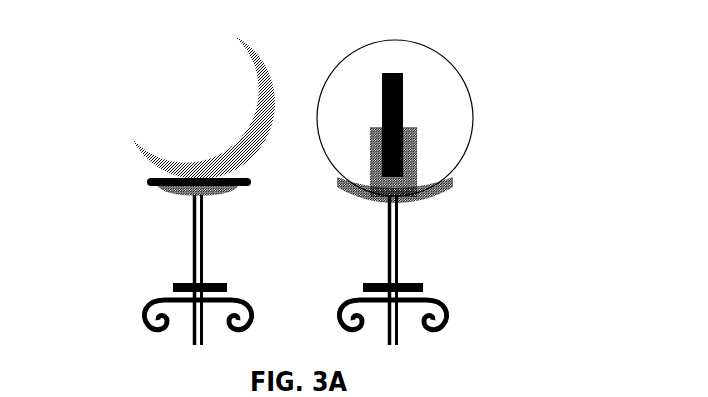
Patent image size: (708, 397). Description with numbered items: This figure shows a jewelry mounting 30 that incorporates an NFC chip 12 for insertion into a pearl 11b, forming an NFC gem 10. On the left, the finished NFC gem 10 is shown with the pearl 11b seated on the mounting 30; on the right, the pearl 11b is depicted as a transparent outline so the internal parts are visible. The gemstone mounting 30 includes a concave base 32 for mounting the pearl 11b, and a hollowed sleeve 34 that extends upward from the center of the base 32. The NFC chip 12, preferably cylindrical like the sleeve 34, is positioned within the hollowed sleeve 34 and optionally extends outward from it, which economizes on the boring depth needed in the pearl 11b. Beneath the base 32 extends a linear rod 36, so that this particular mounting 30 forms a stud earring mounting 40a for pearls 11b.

The NFC gem 10 is at (119, 69).
The pearl 11b is at (355, 56).
The NFC chip 12 is at (403, 100).
The gemstone mounting 30 is at (483, 181).
The earring mounting 40a is at (483, 181).
The base 32 is at (423, 198).
The hollowed sleeve 34 is at (417, 147).
The linear rod 36 is at (390, 260).